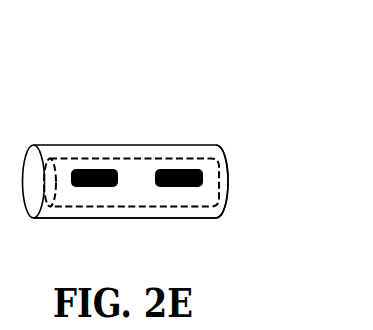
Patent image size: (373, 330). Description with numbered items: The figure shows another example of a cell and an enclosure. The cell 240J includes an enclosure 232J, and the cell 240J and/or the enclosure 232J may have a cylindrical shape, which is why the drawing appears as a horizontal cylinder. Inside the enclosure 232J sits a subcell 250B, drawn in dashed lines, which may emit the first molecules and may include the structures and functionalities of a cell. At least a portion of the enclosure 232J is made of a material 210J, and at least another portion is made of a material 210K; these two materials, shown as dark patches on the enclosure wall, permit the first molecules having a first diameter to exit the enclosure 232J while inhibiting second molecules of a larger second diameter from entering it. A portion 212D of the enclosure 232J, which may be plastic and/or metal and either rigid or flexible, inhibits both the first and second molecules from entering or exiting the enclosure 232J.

The cell 240J is at (145, 108).
The enclosure 232J is at (42, 219).
The subcell 250B is at (142, 207).
The portion 212D is at (209, 153).
The material 210J is at (100, 169).
The material 210K is at (184, 169).